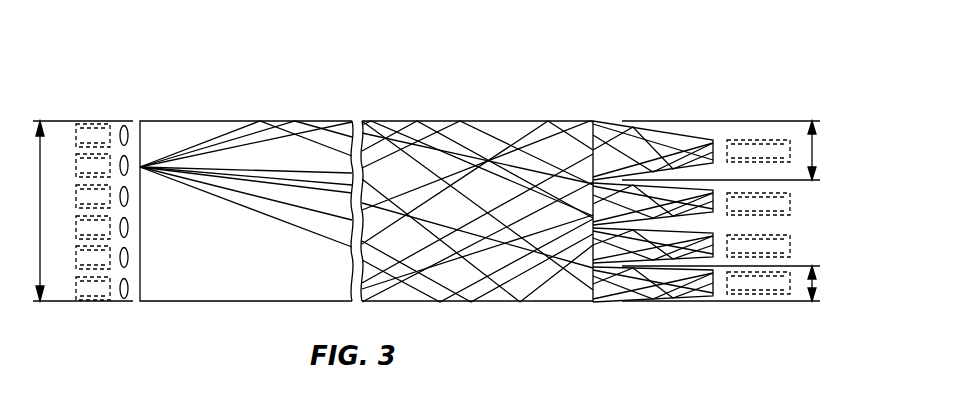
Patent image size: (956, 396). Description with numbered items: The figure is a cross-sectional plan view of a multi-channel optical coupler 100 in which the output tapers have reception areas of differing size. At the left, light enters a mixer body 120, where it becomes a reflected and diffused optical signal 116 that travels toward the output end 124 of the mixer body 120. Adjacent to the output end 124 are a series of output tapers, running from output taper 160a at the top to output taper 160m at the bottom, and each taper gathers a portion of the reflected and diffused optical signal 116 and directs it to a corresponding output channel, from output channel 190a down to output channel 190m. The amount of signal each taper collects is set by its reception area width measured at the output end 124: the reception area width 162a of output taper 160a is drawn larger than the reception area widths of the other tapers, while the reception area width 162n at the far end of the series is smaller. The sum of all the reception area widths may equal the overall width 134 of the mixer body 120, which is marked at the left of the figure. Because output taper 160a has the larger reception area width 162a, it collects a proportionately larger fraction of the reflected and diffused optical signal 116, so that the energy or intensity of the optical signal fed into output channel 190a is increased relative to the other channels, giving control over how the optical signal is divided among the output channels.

The multi-channel optical coupler 100 is at (266, 84).
The overall width of the mixer body 134 is at (42, 171).
The mixer body 120 is at (168, 303).
The output end of the mixer body 124 is at (568, 150).
The reflected and diffused optical signal 116 is at (477, 219).
The output taper 160a is at (659, 132).
The output taper 160m is at (662, 300).
The output channel 190a is at (746, 140).
The output channel 190m is at (737, 296).
The reception area width 162a is at (815, 143).
The last output height 162n is at (817, 284).